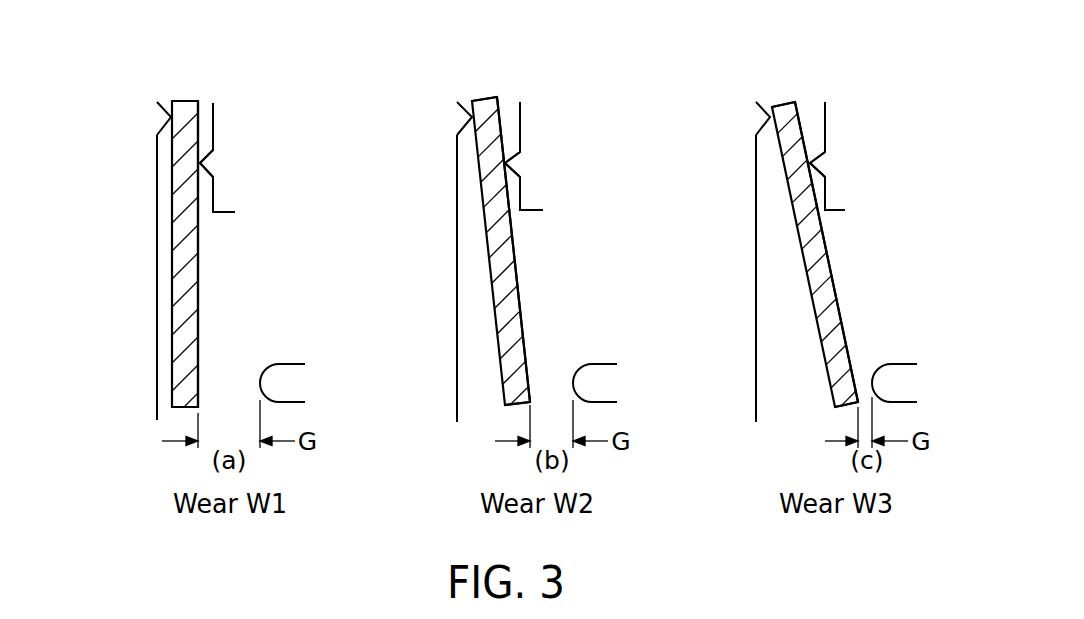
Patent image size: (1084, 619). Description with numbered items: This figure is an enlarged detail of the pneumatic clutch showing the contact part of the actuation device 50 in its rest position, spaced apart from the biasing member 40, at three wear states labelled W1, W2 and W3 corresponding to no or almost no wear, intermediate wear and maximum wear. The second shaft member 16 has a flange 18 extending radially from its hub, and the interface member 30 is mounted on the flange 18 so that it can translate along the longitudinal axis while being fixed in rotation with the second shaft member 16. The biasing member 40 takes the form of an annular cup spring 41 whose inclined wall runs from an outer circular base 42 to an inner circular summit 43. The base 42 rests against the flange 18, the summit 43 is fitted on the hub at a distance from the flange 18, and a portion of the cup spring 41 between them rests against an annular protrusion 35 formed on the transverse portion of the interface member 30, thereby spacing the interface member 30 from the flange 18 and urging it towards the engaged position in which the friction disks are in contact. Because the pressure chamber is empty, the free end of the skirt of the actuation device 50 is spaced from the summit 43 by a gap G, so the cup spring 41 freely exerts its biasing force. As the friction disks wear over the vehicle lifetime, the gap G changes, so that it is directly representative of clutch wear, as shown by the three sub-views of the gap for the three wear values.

The second shaft member 16 is at (132, 179).
The flange 18 is at (157, 155).
The interface member 30 is at (225, 101).
The annular protrusion 35 is at (205, 163).
The biasing member 40 is at (211, 288).
The cup spring 41 is at (198, 255).
The outer circular base 42 is at (183, 100).
The inner circular summit 43 is at (187, 393).
The actuation device 50 is at (304, 351).